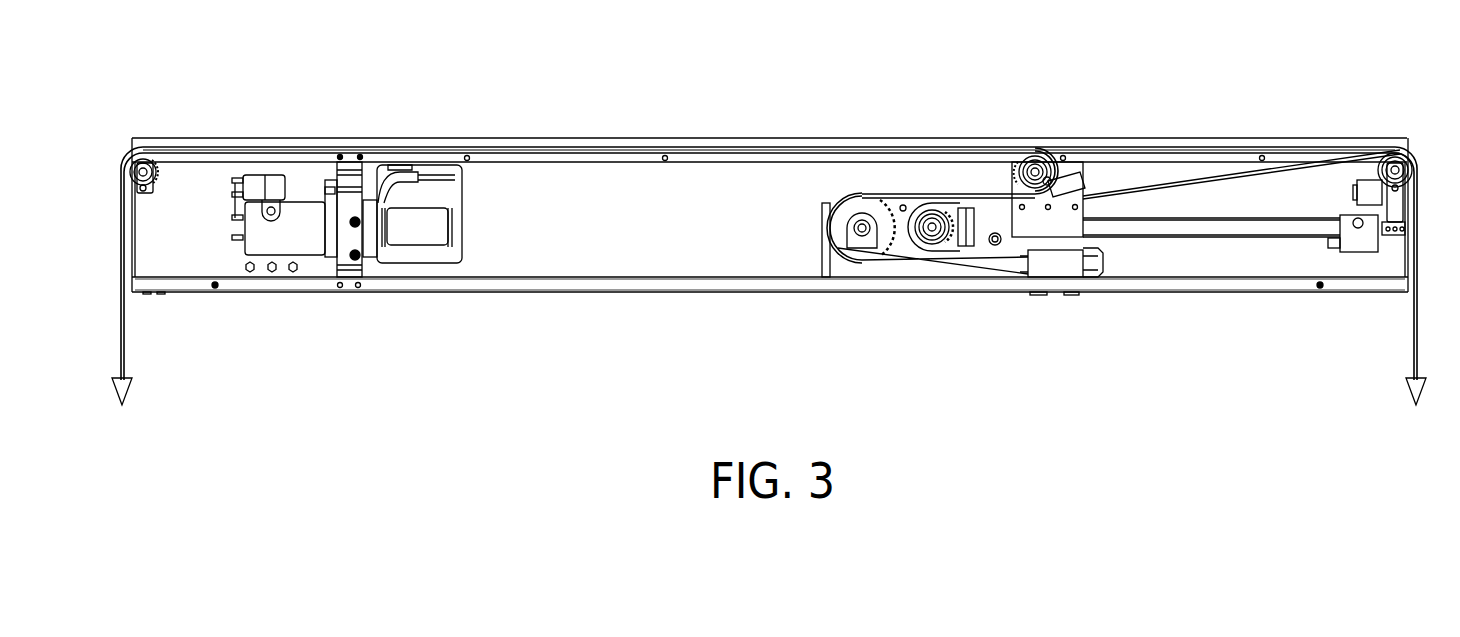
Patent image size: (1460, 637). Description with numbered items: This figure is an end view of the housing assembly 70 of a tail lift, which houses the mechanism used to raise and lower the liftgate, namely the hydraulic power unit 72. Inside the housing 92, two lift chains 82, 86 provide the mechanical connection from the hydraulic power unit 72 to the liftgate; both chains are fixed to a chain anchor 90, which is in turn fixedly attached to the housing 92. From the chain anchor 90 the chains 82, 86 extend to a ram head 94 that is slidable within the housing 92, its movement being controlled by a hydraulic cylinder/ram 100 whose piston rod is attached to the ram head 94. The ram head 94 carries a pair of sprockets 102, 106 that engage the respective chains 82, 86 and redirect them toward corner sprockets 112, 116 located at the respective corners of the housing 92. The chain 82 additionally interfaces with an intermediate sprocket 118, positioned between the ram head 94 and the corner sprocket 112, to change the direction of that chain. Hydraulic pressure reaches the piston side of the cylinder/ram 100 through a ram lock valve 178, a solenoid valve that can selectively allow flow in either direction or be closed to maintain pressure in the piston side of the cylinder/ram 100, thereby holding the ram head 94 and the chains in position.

The housing assembly 70 is at (562, 112).
The hydraulic power unit 72 is at (313, 245).
The lift chain 82 is at (895, 150).
The lift chain 86 is at (1277, 163).
The chain anchor 90 is at (1097, 275).
The housing 92 is at (655, 292).
The ram head 94 is at (908, 248).
The hydraulic cylinder/ram 100 is at (1217, 235).
The sprocket 102 is at (840, 238).
The sprocket 106 is at (935, 237).
The corner sprocket 112 is at (128, 166).
The corner sprocket 116 is at (1420, 170).
The intermediate sprocket 118 is at (1035, 162).
The ram lock valve 178 is at (1357, 242).